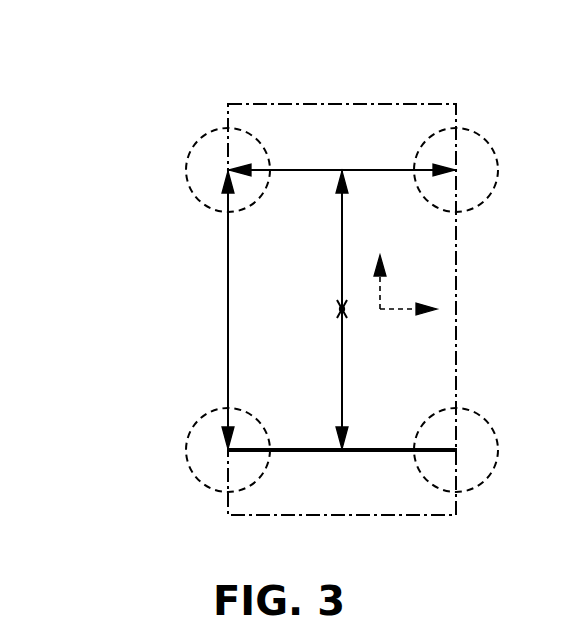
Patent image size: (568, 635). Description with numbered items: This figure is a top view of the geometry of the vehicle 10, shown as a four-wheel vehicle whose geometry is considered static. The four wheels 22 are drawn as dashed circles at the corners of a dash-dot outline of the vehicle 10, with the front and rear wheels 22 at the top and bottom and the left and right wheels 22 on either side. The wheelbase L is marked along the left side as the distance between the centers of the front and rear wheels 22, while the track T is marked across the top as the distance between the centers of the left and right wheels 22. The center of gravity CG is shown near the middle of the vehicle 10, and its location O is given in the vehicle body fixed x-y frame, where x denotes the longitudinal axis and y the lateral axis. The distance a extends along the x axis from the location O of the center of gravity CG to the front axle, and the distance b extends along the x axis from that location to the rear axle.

The vehicle 10 is at (80, 60).
The wheels 22 is at (251, 134).
The track T is at (342, 159).
The wheelbase L is at (219, 310).
The distance from center of gravity to front axle a is at (335, 239).
The distance from center of gravity to rear axle b is at (336, 379).
The center of gravity CG is at (322, 310).
The location of center of gravity O is at (396, 297).